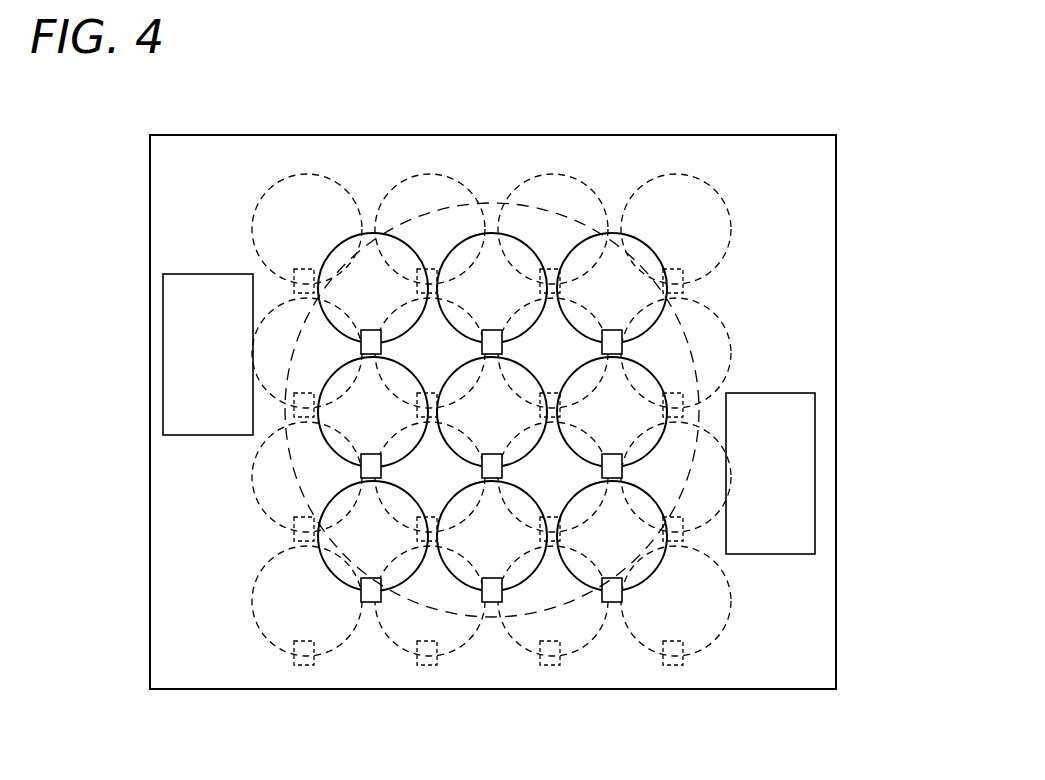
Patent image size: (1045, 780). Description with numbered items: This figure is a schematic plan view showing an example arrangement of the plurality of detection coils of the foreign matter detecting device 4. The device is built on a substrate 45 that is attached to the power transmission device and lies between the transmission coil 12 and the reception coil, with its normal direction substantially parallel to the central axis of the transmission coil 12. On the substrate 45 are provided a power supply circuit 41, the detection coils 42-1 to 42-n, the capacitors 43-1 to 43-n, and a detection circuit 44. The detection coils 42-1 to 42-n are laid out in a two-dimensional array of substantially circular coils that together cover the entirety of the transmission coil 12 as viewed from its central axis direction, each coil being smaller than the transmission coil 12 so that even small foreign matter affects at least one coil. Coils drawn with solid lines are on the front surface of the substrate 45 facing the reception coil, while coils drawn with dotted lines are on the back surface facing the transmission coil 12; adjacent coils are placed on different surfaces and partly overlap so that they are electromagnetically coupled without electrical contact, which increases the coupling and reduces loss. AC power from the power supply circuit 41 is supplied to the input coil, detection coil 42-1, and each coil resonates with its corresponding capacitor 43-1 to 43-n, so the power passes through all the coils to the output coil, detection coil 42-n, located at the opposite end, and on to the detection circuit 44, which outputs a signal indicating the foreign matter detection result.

The foreign matter detecting device 4 is at (719, 704).
The transmission coil 12 is at (490, 205).
The power supply circuit 41 is at (165, 355).
The detection coil 42-1 is at (295, 402).
The detection coil 42-n is at (707, 432).
The capacitor 43-1 is at (306, 425).
The capacitor 43-n is at (673, 538).
The detection circuit 44 is at (815, 478).
The substrate 45 is at (605, 690).